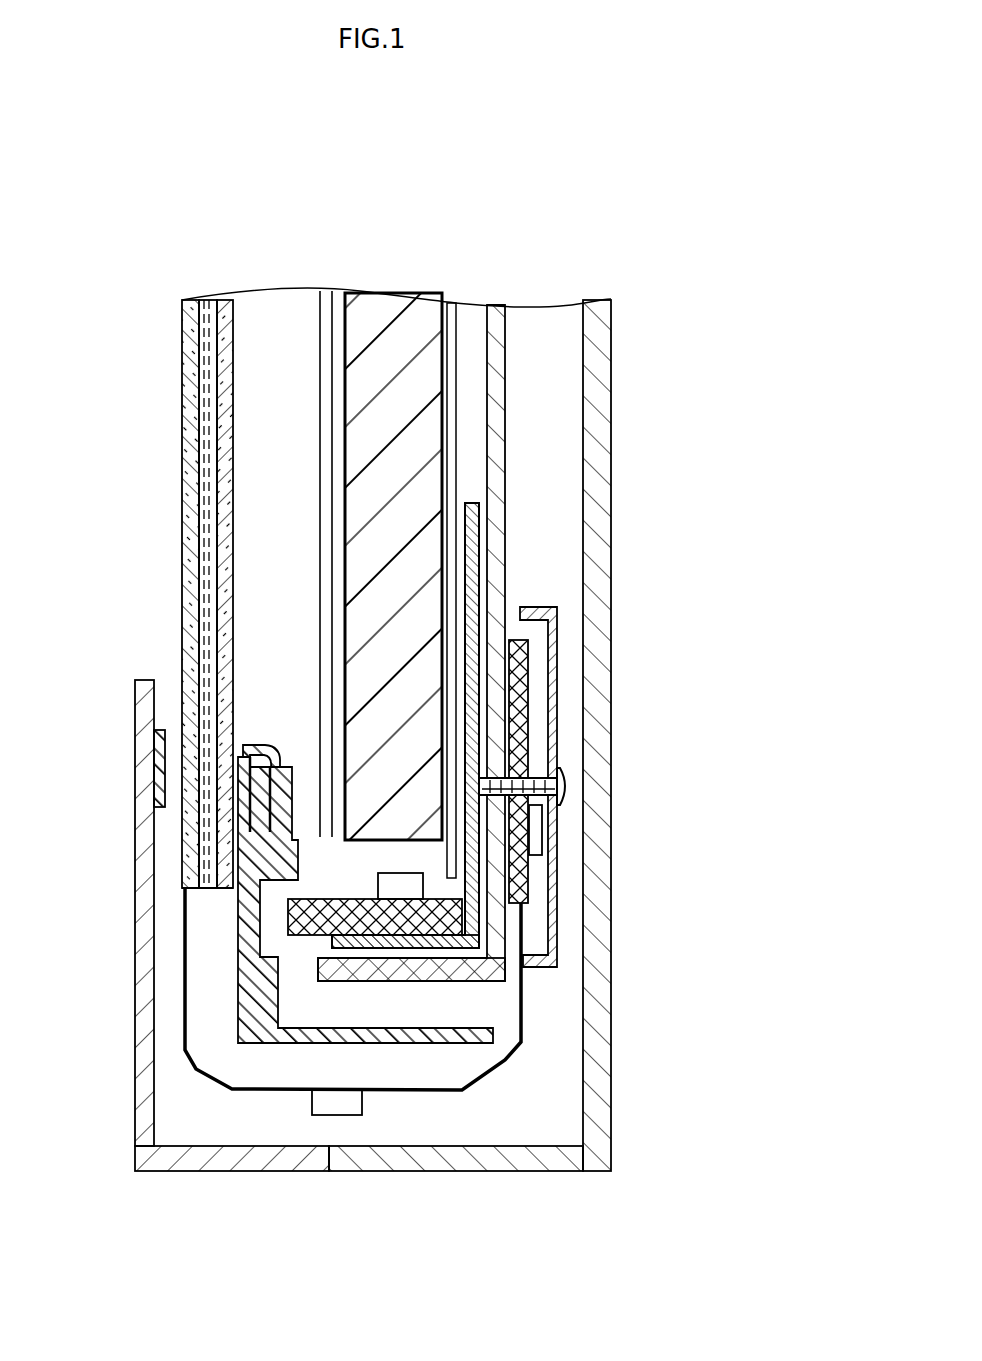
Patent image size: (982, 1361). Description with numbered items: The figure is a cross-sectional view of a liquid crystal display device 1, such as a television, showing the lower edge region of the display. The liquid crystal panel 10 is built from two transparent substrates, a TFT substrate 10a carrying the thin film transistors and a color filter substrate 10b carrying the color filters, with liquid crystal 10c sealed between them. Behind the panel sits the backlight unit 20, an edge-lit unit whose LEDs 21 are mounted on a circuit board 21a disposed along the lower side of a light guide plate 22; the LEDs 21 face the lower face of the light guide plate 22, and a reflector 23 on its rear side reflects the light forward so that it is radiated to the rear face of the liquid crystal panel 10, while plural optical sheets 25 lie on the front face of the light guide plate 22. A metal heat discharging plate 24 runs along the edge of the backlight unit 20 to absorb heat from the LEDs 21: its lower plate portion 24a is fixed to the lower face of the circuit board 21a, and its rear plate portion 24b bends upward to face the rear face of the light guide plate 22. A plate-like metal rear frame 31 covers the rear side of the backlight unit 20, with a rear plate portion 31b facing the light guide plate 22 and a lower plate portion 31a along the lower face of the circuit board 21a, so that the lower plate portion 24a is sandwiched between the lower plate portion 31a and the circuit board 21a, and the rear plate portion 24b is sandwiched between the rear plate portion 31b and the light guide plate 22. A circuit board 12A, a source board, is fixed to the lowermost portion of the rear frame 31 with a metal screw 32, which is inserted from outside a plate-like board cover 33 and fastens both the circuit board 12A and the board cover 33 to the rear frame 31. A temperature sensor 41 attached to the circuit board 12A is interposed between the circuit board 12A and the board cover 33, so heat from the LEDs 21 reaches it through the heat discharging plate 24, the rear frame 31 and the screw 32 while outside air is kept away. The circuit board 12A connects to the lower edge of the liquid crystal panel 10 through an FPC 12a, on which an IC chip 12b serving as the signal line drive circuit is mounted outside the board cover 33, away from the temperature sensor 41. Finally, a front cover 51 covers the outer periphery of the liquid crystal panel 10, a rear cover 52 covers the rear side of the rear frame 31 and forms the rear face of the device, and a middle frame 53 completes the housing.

The liquid crystal display device 1 is at (466, 160).
The liquid crystal panel 10 is at (168, 390).
The TFT substrate 10a is at (226, 298).
The color filter substrate 10b is at (190, 300).
The liquid crystal 10c is at (209, 298).
The backlight unit 20 is at (468, 345).
The LEDs 21 is at (378, 878).
The circuit board 21a is at (308, 920).
The light guide plate 22 is at (390, 298).
The reflector 23 is at (452, 307).
The heat discharging plate 24 is at (490, 545).
The lower plate portion 24a is at (435, 950).
The rear plate portion 24b is at (480, 577).
The optical sheets 25 is at (332, 291).
The rear frame 31 is at (517, 380).
The lower plate portion 31a is at (397, 985).
The rear plate portion 31b is at (505, 402).
The screw 32 is at (570, 792).
The board cover 33 is at (557, 677).
The temperature sensor 41 is at (537, 832).
The front cover 51 is at (146, 850).
The rear cover 52 is at (590, 1000).
The middle frame 53 is at (257, 993).
The circuit board 12A is at (525, 885).
The FPC 12a is at (245, 1093).
The IC chip 12b is at (350, 1115).